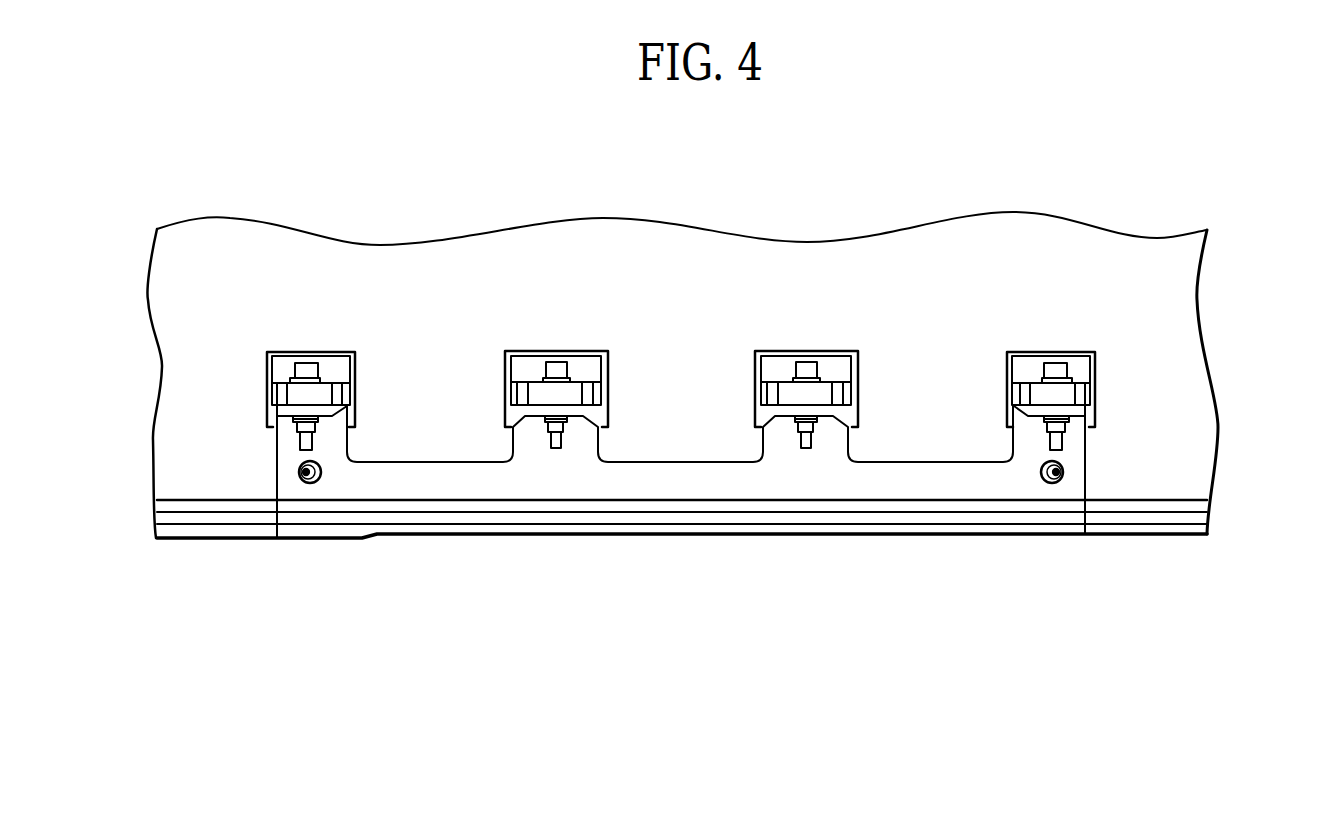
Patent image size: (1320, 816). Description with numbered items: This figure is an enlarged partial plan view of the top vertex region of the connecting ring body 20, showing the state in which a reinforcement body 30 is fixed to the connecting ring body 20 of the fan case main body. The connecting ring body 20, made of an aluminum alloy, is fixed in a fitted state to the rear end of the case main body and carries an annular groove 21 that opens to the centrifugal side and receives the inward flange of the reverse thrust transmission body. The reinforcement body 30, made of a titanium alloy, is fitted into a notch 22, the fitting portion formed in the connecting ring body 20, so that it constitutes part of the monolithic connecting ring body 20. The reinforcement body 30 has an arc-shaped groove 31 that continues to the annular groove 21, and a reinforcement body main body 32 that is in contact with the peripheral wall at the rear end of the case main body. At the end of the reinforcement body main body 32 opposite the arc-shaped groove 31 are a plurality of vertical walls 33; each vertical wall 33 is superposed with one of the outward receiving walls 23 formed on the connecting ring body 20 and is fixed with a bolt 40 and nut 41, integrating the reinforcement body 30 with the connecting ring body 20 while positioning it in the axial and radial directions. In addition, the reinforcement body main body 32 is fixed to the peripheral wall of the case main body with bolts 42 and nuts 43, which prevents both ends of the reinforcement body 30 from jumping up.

The connecting ring body 20 is at (444, 333).
The annular groove 21 is at (1182, 520).
The notch 22 is at (925, 472).
The outward receiving wall 23 is at (1072, 390).
The reinforcement body 30 is at (912, 538).
The arc-shaped groove 31 is at (700, 516).
The reinforcement body main body 32 is at (657, 480).
The vertical wall 33 is at (1032, 410).
The bolt 40 is at (1058, 365).
The nut 41 is at (567, 428).
The bolt 42 is at (1070, 565).
The nut 43 is at (1043, 565).